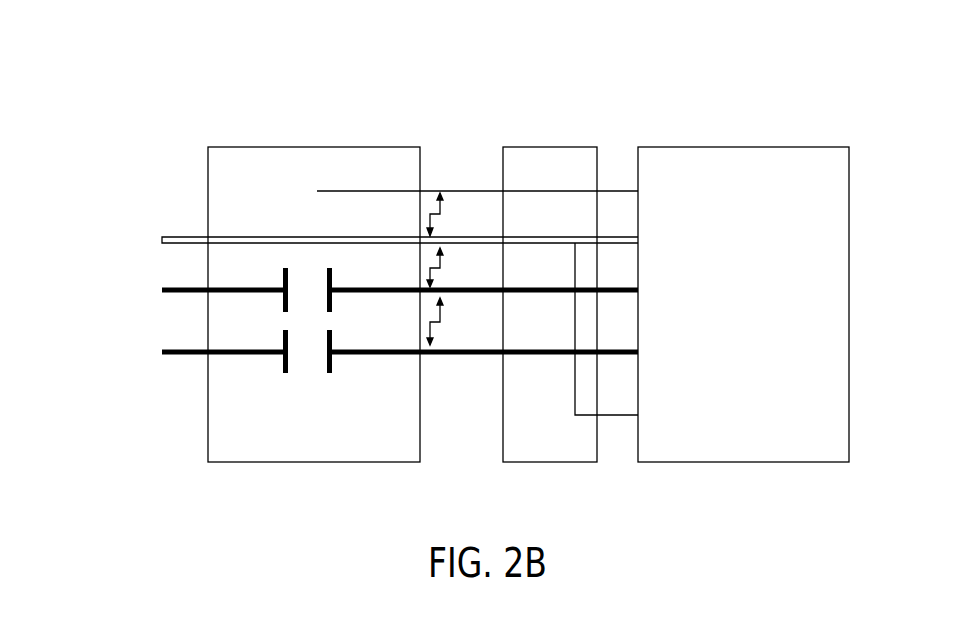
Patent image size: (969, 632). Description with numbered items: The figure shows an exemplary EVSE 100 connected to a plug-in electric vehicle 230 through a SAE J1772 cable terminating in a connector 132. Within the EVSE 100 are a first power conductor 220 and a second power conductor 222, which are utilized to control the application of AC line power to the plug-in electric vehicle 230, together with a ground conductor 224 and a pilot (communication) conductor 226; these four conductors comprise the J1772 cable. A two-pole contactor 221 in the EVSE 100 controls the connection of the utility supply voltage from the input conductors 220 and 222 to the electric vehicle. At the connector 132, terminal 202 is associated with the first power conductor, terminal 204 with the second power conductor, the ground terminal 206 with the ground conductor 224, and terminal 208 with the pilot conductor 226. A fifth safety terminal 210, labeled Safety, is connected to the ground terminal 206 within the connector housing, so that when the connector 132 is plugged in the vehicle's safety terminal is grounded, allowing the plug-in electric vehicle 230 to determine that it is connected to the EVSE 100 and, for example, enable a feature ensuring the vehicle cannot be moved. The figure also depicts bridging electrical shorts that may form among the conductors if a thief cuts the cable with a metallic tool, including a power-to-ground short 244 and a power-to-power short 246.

The EVSE 100 is at (321, 129).
The connector 132 is at (536, 127).
The plug-in electric vehicle 230 is at (758, 305).
The safety terminal 210 is at (592, 417).
The pilot (communication) conductor 226 is at (337, 191).
The terminal 208 is at (480, 191).
The ground conductor 224 is at (172, 238).
The ground terminal 206 is at (585, 238).
The second power conductor 222 is at (172, 292).
The terminal 204 is at (497, 293).
The first power conductor 220 is at (172, 354).
The terminal 202 is at (500, 355).
The 2-pole contactor 221 is at (308, 378).
The power-to-ground short 244 is at (433, 270).
The power-to-power short 246 is at (433, 327).